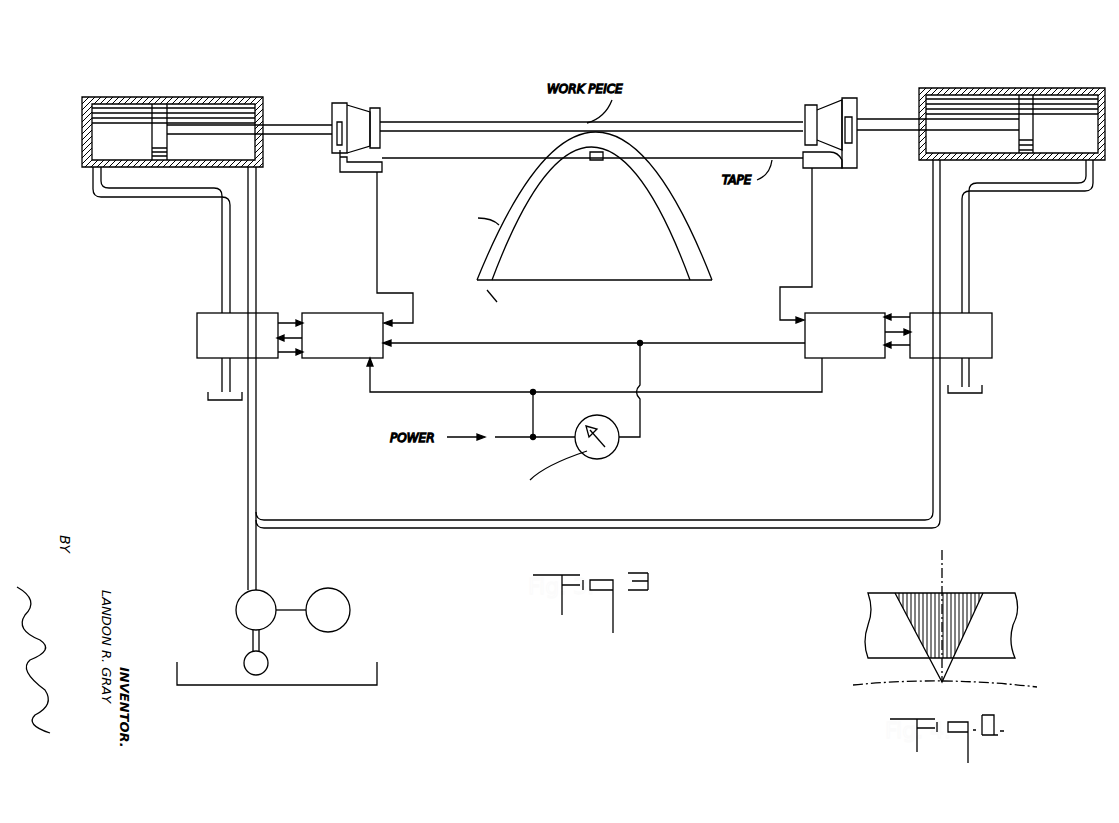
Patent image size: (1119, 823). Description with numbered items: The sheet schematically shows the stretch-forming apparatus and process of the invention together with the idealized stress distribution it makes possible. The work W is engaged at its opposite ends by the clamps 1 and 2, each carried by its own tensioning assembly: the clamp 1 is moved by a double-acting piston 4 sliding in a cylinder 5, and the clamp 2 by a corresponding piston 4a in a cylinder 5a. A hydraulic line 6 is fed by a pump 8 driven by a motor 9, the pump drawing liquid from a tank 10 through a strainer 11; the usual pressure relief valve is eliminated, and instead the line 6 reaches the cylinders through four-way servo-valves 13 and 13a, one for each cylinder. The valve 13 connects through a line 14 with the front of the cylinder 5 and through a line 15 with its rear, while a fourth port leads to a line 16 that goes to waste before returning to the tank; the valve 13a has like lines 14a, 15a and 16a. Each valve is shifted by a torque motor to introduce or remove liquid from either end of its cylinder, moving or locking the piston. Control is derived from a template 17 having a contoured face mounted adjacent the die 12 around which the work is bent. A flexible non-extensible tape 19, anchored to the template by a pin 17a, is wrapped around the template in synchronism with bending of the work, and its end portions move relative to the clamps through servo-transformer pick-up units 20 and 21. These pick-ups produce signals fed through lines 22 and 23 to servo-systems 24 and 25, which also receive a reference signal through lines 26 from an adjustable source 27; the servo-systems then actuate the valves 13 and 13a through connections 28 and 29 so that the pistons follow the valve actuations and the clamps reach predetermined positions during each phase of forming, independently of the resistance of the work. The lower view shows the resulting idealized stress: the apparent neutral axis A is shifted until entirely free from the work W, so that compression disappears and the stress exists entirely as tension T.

In FIG. 3, the clamp 1 is at (360, 108).
In FIG. 3, the clamp 2 is at (833, 108).
In FIG. 3, the double-acting piston 4 is at (150, 165).
In FIG. 3, the double-acting piston 4a is at (1040, 90).
In FIG. 3, the cylinder 5 is at (216, 97).
In FIG. 3, the cylinder 5a is at (975, 88).
In FIG. 3, the hydraulic line 6 is at (248, 456).
In FIG. 3, the hydraulic pump 8 is at (238, 600).
In FIG. 3, the motor 9 is at (347, 600).
In FIG. 3, the tank 10 is at (377, 678).
In FIG. 3, the strainer 11 is at (266, 668).
In FIG. 3, the die 12 is at (679, 212).
In FIG. 3, the 4-way valve 13 is at (197, 314).
In FIG. 3, the 4-way valve 13a is at (992, 314).
In FIG. 3, the line 14 is at (257, 263).
In FIG. 3, the line 14a is at (933, 240).
In FIG. 3, the line 15 is at (133, 197).
In FIG. 3, the line 15a is at (969, 231).
In FIG. 3, the line 16 is at (222, 379).
In FIG. 3, the line 16a is at (969, 370).
In FIG. 3, the template 17 is at (701, 262).
In FIG. 3, the pin 17a is at (597, 160).
In FIG. 3, the tape 19 is at (442, 160).
In FIG. 3, the servo-transformer pick-up unit 20 is at (340, 170).
In FIG. 3, the servo-transformer pick-up unit 21 is at (840, 168).
In FIG. 3, the line 22 is at (377, 265).
In FIG. 3, the line 23 is at (812, 254).
In FIG. 3, the servo-system 24 is at (334, 313).
In FIG. 3, the servo-system 25 is at (862, 358).
In FIG. 3, the lines 26 is at (506, 392).
In FIG. 3, the adjustable source 27 is at (619, 448).
In FIG. 3, the valve control connections 28 is at (292, 322).
In FIG. 3, the valve control connections 29 is at (899, 312).
In FIG. 4, the tension T is at (908, 597).
In FIG. 4, the work W is at (998, 602).
In FIG. 4, the apparent neutral axis A is at (1017, 685).